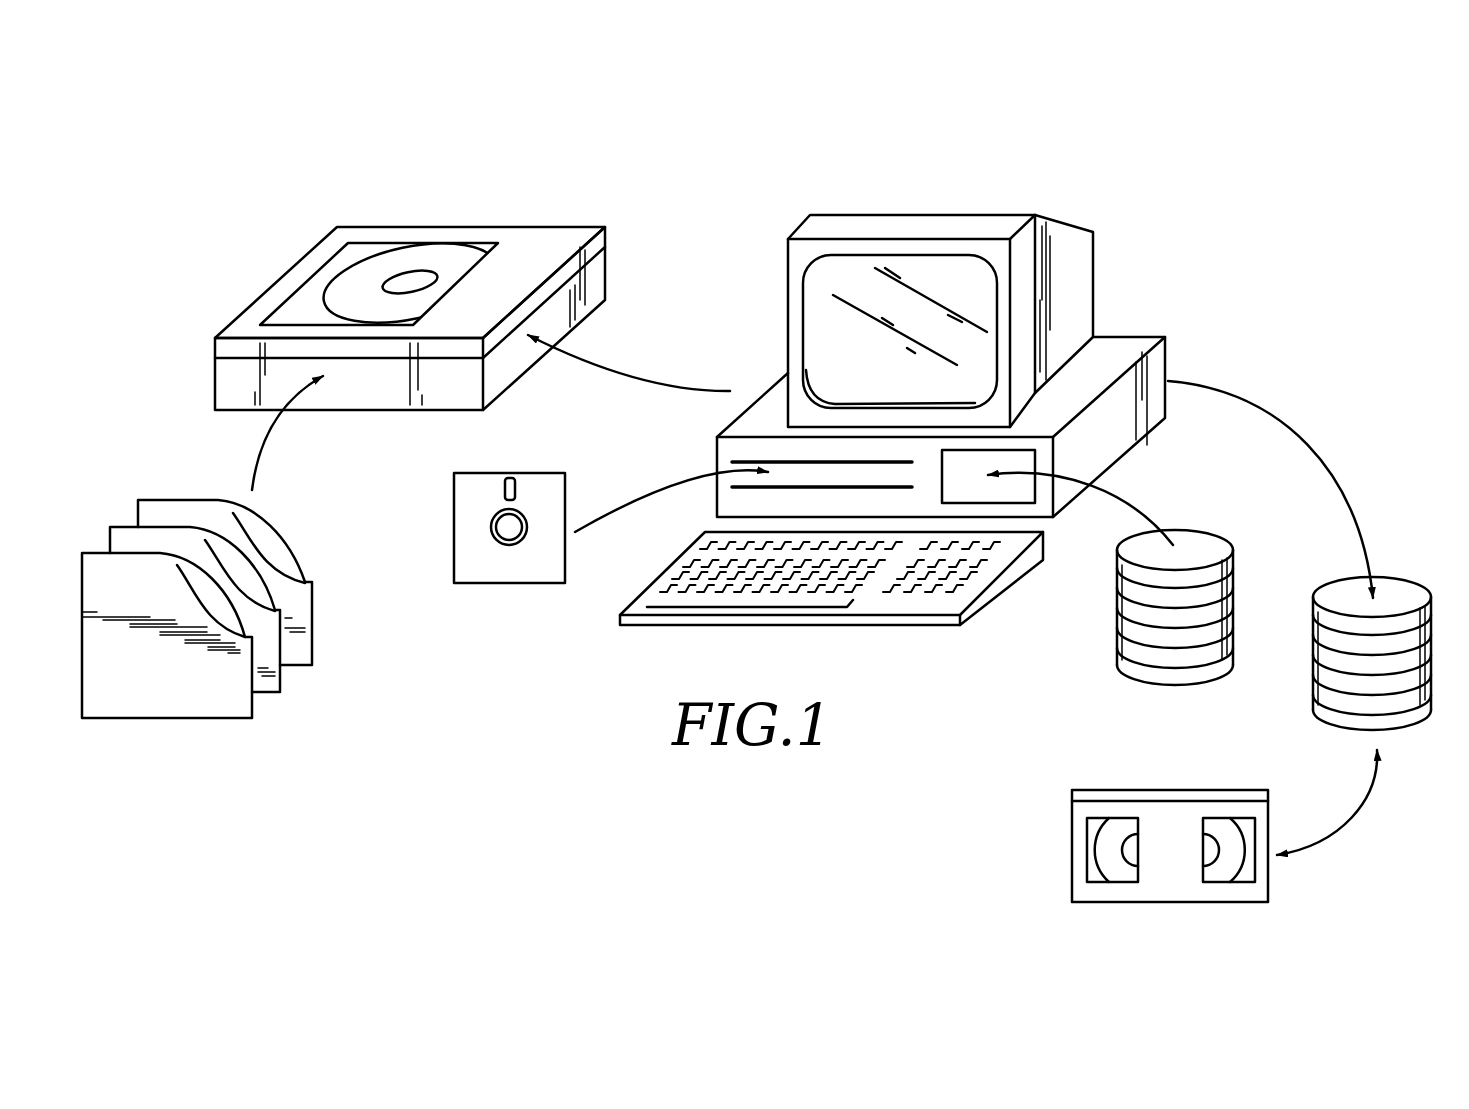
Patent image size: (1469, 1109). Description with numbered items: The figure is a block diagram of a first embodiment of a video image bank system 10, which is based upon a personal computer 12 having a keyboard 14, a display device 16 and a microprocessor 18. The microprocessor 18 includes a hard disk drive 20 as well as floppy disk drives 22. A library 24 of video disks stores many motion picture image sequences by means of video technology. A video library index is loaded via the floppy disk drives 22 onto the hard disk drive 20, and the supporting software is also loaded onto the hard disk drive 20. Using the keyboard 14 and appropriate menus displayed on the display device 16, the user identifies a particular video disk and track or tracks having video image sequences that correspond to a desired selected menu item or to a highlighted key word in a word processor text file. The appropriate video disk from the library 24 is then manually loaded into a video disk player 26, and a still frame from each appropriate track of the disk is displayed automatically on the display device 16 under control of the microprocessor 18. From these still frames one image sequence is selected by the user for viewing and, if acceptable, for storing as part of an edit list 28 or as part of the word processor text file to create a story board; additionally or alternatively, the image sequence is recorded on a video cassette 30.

The video image bank system 10 is at (468, 703).
The personal computer 12 is at (1147, 268).
The keyboard 14 is at (852, 627).
The display device 16 is at (912, 214).
The microprocessor 18 is at (1108, 452).
The hard disk drive 20 is at (1120, 610).
The floppy disk drives 22 is at (453, 548).
The library of video disks 24 is at (208, 720).
The video disk player 26 is at (297, 262).
The edit list 28 is at (1313, 678).
The video cassette 30 is at (1132, 790).